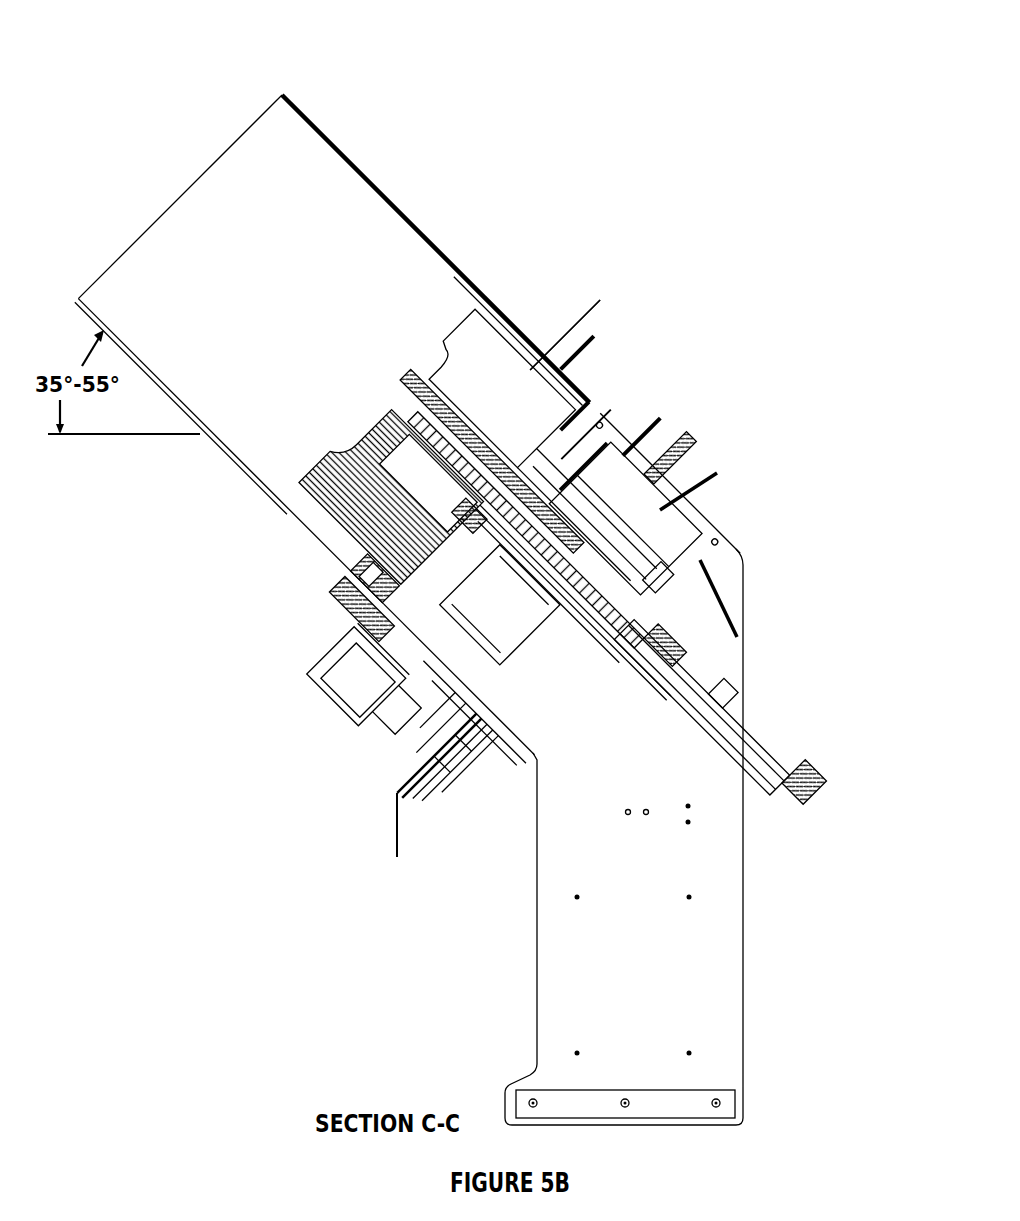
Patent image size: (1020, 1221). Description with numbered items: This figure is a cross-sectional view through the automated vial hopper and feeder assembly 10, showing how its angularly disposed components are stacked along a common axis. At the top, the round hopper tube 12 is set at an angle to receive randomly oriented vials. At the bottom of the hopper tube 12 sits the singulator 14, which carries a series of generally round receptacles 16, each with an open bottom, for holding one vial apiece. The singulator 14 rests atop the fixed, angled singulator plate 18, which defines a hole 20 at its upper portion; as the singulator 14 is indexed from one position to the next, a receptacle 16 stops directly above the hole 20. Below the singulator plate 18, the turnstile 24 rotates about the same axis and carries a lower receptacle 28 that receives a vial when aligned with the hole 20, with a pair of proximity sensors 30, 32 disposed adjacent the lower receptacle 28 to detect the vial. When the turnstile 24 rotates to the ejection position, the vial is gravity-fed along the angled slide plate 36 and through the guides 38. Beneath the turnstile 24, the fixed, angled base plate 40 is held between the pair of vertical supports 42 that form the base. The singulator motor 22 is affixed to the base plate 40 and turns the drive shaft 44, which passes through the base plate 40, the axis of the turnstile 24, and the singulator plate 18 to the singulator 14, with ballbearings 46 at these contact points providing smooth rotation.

The vial hopper and feeder assembly 10 is at (376, 123).
The hopper tube 12 is at (444, 240).
The singulator 14 is at (373, 541).
The receptacles 16 is at (500, 348).
The singulator plate 18 is at (375, 616).
The hole 20 is at (592, 404).
The motor 22 is at (773, 763).
The turnstile 24 is at (427, 606).
The lower receptacle 28 is at (658, 505).
The proximity sensor 30 is at (681, 430).
The proximity sensor 32 is at (697, 572).
The slide plate 36 is at (393, 836).
The guides 38 is at (352, 677).
The base plate 40 is at (456, 820).
The vertical supports 42 is at (725, 982).
The drive shaft 44 is at (457, 732).
The ballbearings 46 is at (663, 628).